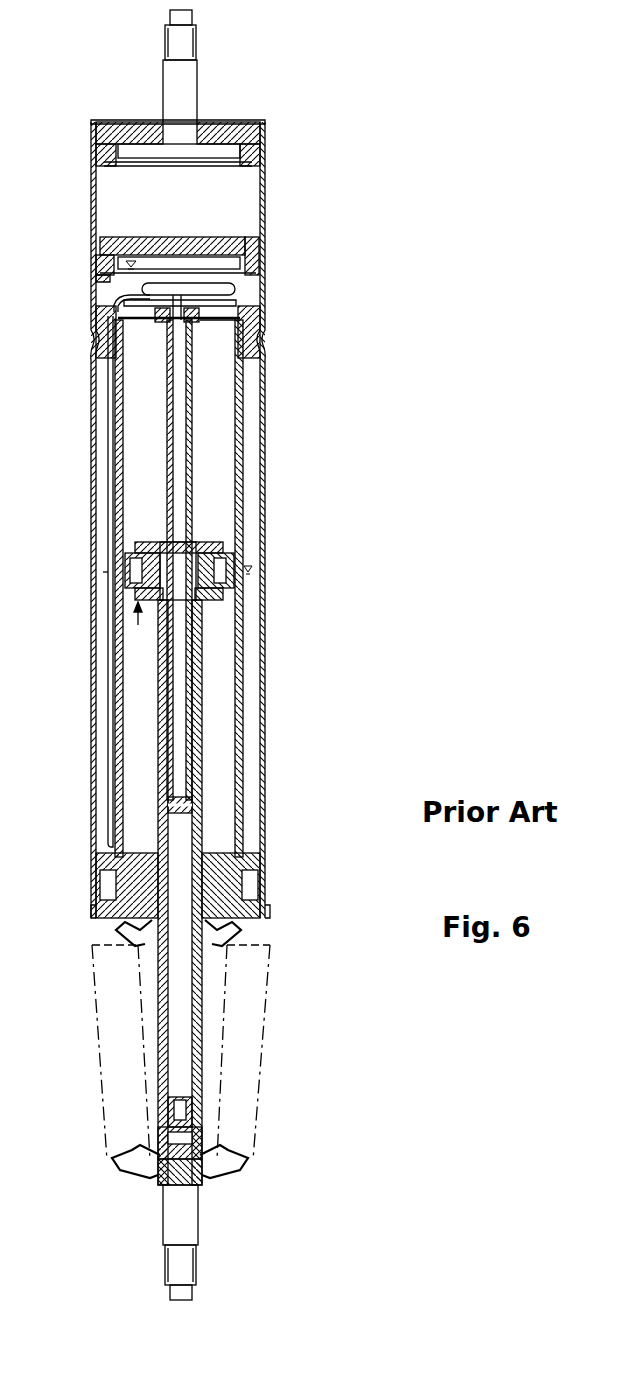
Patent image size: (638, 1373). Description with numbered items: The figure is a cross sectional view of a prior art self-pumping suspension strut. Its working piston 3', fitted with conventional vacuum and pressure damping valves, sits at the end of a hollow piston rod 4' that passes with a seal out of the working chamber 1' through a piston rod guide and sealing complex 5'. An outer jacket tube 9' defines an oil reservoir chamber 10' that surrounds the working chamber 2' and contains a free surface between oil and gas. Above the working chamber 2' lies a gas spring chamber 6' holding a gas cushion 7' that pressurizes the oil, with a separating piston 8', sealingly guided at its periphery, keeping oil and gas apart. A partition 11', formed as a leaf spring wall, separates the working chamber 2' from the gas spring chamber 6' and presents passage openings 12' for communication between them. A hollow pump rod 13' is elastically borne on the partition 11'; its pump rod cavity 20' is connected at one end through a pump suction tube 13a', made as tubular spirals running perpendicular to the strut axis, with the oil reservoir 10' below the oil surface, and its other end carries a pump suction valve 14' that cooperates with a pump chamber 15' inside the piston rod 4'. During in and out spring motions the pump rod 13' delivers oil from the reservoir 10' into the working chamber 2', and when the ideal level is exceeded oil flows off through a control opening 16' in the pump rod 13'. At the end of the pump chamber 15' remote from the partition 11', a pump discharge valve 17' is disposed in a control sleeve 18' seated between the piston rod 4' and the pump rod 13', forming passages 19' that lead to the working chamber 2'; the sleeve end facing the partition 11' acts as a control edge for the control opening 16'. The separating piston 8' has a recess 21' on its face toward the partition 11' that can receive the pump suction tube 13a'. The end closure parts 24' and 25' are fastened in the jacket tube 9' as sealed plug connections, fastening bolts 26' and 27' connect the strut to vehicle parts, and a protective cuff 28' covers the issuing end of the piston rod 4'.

The working chamber 1' is at (87, 585).
The working chamber 2' is at (97, 581).
The working piston 3' is at (152, 611).
The hollow piston rod 4' is at (109, 1045).
The piston rod guide and sealing complex 5' is at (159, 885).
The gas spring chamber 6' is at (304, 203).
The gas cushion 7' is at (206, 201).
The separating piston 8' is at (207, 240).
The outer jacket tube 9' is at (210, 520).
The oil reservoir chamber 10' is at (223, 588).
The partition 11' is at (227, 324).
The passage openings 12' is at (219, 356).
The hollow pump rod 13' is at (257, 560).
The pump suction tube 13a' is at (239, 295).
The pump suction valve 14' is at (118, 795).
The pump chamber 15' is at (247, 892).
The control opening 16' is at (235, 546).
The pump discharge valve 17' is at (122, 1123).
The control sleeve 18' is at (241, 1134).
The passages 19' is at (156, 1052).
The pump rod cavity 20' is at (114, 555).
The recess 21' is at (69, 301).
The end closure part 24' is at (227, 919).
The end closure part 25' is at (184, 118).
The fastening bolt 26' is at (220, 61).
The fastening bolt 27' is at (224, 1242).
The protective cuff 28' is at (217, 1176).